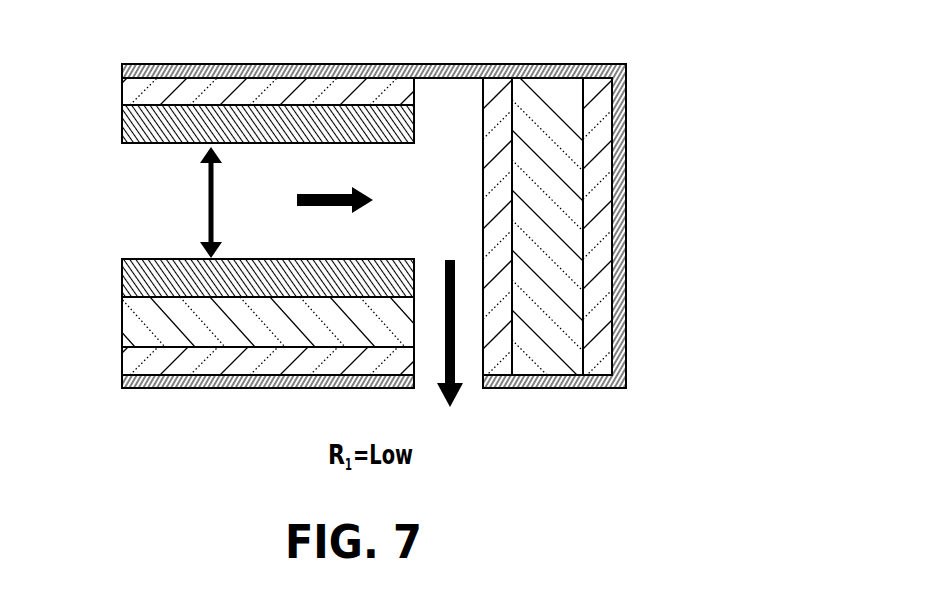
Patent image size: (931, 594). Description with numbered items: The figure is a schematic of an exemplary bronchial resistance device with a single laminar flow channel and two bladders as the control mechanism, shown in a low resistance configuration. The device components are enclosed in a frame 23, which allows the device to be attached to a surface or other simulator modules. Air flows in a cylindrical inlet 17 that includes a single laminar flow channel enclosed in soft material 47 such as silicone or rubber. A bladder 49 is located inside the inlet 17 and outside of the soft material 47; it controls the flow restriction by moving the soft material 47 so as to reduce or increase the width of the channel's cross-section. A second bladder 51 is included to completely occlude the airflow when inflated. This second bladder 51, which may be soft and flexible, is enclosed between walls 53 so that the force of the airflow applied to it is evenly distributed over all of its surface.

The inlet 17 is at (122, 95).
The frame 23 is at (122, 71).
The soft material 47 is at (122, 128).
The bladder 49 is at (122, 322).
The second bladder 51 is at (545, 95).
The walls 53 is at (498, 95).